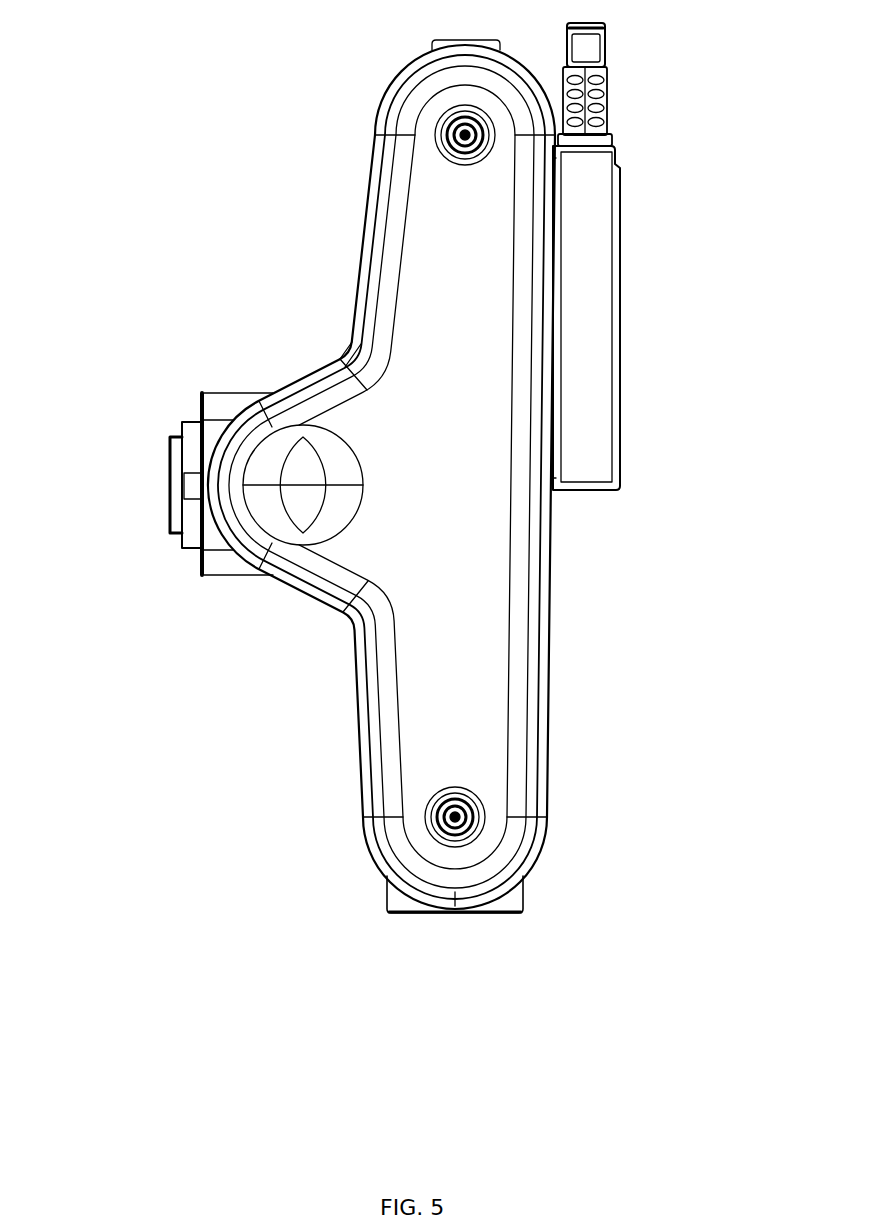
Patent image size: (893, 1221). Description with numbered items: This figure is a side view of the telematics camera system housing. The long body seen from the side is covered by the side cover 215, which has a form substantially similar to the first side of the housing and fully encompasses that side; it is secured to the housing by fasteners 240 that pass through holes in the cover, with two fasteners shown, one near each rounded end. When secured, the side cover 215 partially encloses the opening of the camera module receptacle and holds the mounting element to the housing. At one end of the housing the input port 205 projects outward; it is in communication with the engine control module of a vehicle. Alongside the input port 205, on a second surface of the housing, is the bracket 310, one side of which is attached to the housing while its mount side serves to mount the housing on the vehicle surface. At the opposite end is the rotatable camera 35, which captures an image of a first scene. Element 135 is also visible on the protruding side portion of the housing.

The rotatable camera 35 is at (525, 903).
The knob 135 is at (185, 422).
The input port 205 is at (608, 92).
The side cover 215 is at (357, 653).
The fastener 240 is at (461, 132).
The bracket 310 is at (625, 293).